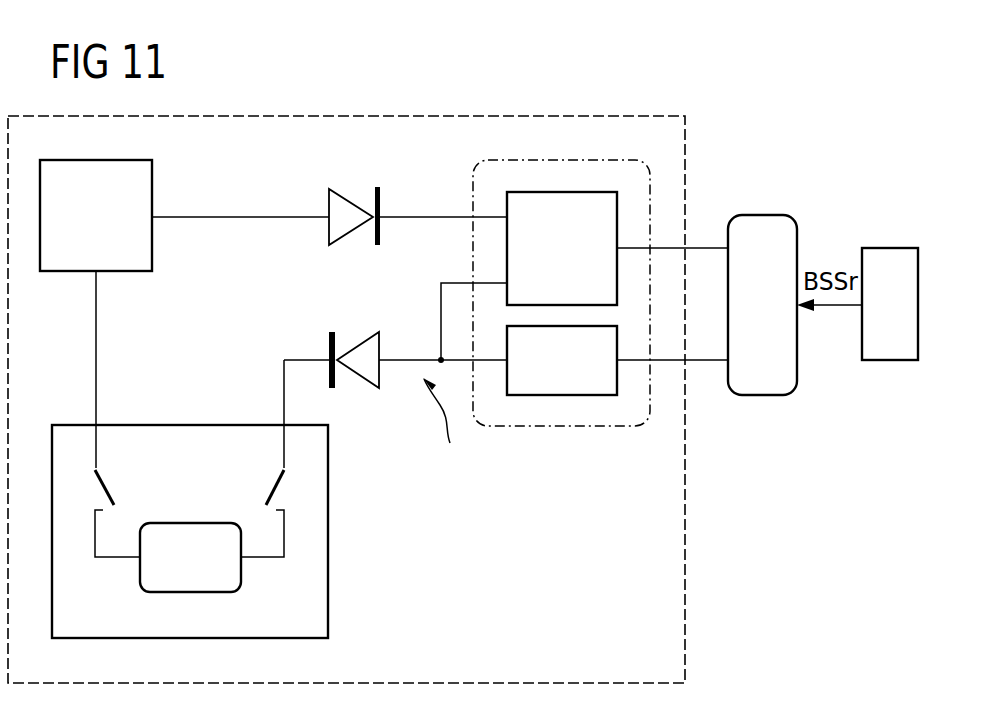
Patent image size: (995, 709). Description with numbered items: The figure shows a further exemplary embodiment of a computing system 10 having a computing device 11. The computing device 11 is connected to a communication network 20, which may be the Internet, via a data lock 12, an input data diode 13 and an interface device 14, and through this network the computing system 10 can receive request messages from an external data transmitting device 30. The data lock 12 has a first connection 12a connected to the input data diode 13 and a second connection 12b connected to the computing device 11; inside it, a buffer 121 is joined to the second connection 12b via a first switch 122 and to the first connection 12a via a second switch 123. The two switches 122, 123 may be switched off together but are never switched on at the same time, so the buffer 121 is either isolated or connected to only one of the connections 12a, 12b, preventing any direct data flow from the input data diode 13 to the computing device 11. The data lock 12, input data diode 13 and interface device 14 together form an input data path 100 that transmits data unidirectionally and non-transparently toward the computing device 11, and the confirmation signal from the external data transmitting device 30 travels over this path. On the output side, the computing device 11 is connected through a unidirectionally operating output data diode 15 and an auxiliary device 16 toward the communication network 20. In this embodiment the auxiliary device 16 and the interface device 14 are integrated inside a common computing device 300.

The computing system 10 is at (685, 537).
The computing device 11 is at (96, 215).
The data lock 12 is at (328, 535).
The first connection 12a is at (283, 425).
The second connection 12b is at (97, 425).
The buffer 121 is at (190, 557).
The first switch 122 is at (104, 490).
The second switch 123 is at (275, 490).
The input data diode 13 is at (360, 341).
The interface device 14 is at (562, 360).
The output data diode 15 is at (355, 200).
The auxiliary device 16 is at (562, 248).
The communication network 20 is at (762, 305).
The external data transmitting device 30 is at (890, 304).
The input data path 100 is at (450, 428).
The common computing device 300 is at (566, 427).